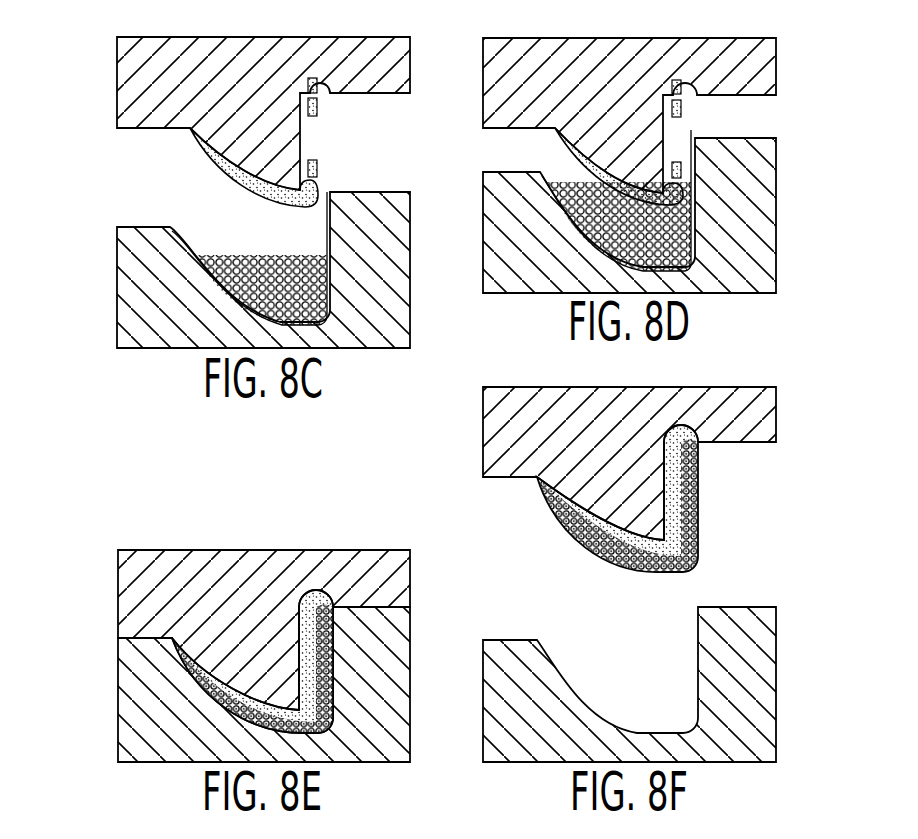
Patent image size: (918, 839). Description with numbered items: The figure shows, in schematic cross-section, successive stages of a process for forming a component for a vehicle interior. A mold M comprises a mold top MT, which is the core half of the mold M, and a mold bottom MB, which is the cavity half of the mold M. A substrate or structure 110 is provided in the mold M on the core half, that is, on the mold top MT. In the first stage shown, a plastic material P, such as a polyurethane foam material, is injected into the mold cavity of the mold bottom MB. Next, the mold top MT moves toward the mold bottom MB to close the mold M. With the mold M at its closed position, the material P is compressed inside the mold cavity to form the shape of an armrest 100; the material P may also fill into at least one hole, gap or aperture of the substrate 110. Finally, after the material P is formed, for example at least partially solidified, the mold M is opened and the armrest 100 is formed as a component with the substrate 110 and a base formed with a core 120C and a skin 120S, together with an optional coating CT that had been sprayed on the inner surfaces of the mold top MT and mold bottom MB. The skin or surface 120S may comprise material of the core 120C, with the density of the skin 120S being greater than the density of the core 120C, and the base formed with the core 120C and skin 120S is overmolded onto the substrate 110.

In FIG. 8C, the plastic material P is at (207, 256).
In FIG. 8D, the plastic material P is at (691, 130).
In FIG. 8D, the mold top MT is at (777, 67).
In FIG. 8E, the mold top MT is at (118, 597).
In FIG. 8F, the mold top MT is at (777, 415).
In FIG. 8D, the mold bottom MB is at (777, 217).
In FIG. 8E, the mold bottom MB is at (118, 700).
In FIG. 8F, the mold bottom MB is at (777, 695).
In FIG. 8D, the substrate 110 is at (683, 107).
In FIG. 8E, the mold M is at (236, 635).
In FIG. 8F, the mold M is at (659, 540).
In FIG. 8F, the armrest 100 is at (688, 521).
In FIG. 8F, the core 120C is at (700, 467).
In FIG. 8F, the skin 120S is at (700, 535).
In FIG. 8F, the coating CT is at (700, 560).